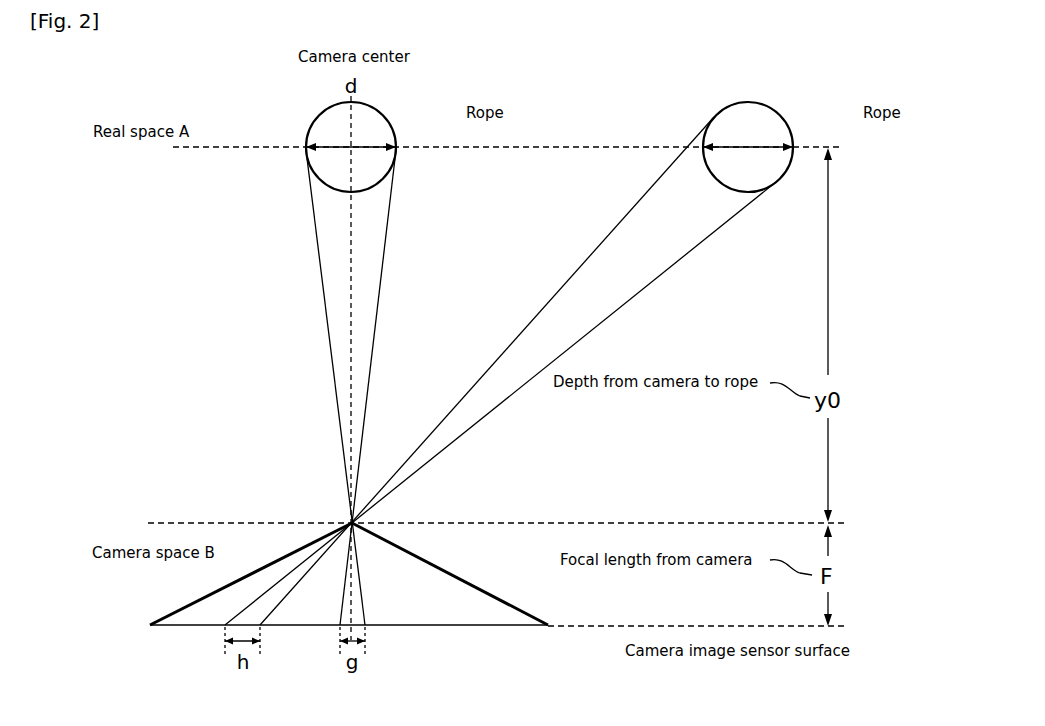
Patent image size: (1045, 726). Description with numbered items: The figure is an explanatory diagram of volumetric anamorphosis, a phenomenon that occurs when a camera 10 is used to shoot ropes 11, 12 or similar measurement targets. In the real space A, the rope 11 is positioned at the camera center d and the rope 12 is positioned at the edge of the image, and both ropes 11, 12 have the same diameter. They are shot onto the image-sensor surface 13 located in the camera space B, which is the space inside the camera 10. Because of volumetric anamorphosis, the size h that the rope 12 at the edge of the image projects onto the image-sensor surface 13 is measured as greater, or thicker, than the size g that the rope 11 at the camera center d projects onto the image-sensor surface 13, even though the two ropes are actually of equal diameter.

The camera 10 is at (256, 541).
The rope 11 is at (378, 131).
The rope 12 is at (777, 131).
The image-sensor surface 13 is at (522, 629).